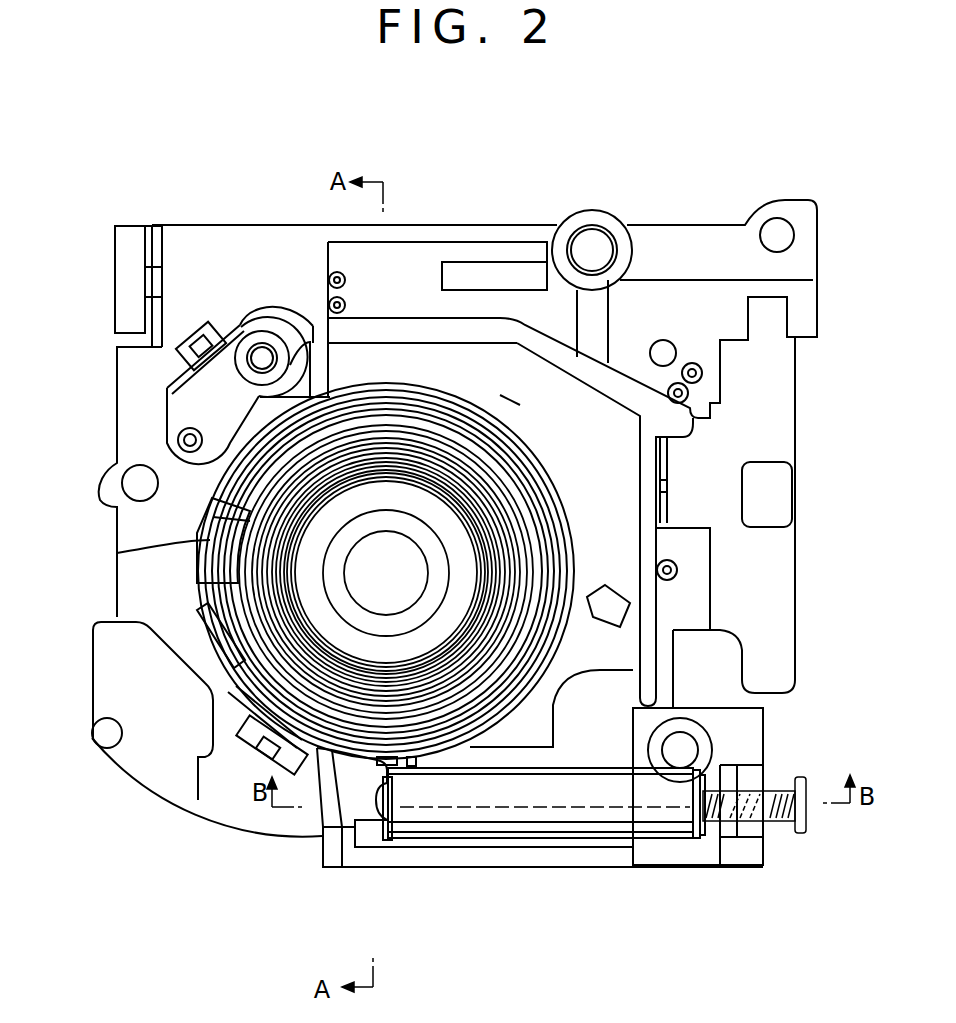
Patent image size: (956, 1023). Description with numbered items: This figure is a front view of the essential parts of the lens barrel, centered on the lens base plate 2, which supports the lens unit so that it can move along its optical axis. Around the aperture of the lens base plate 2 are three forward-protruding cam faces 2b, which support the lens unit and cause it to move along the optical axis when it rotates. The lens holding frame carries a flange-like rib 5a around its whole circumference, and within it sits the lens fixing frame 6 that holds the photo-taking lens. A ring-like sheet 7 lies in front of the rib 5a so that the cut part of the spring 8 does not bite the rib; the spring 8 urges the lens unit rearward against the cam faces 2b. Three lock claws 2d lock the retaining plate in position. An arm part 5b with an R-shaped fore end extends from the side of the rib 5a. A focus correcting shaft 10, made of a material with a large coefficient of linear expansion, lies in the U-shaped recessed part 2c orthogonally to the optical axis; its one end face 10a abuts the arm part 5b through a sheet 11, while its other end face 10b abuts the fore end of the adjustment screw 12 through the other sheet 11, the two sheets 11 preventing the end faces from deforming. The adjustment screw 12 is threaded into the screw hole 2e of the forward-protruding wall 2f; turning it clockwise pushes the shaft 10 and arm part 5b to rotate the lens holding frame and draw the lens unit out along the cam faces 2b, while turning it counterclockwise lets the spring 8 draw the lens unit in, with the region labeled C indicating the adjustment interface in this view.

The lens base plate 2 is at (130, 410).
The cam faces 2b is at (514, 405).
The recessed part 2c is at (595, 840).
The lock claws 2d is at (176, 348).
The screw hole 2e is at (762, 790).
The wall 2f is at (757, 838).
The rib 5a is at (333, 395).
The arm part 5b is at (355, 797).
The lens fixing frame 6 is at (412, 432).
The sheet 7 is at (207, 500).
The spring 8 is at (205, 613).
The focus correcting shaft 10 is at (540, 825).
The end face 10a is at (407, 838).
The end face 10b is at (697, 830).
The sheets 11 is at (385, 840).
The adjustment screw 12 is at (803, 788).
The gap C is at (448, 760).